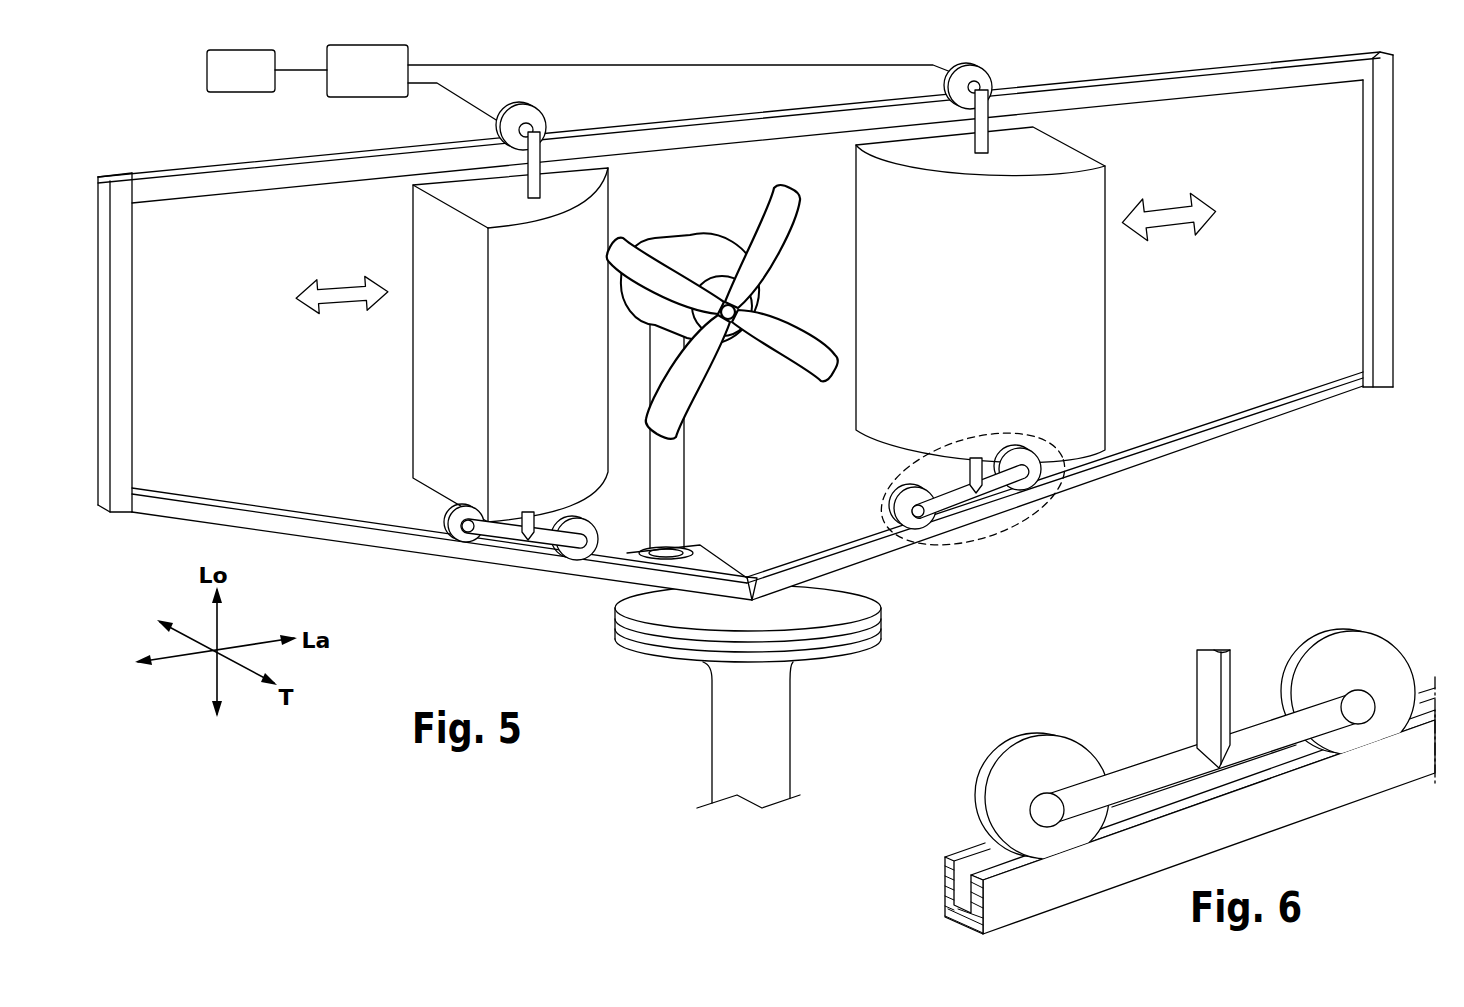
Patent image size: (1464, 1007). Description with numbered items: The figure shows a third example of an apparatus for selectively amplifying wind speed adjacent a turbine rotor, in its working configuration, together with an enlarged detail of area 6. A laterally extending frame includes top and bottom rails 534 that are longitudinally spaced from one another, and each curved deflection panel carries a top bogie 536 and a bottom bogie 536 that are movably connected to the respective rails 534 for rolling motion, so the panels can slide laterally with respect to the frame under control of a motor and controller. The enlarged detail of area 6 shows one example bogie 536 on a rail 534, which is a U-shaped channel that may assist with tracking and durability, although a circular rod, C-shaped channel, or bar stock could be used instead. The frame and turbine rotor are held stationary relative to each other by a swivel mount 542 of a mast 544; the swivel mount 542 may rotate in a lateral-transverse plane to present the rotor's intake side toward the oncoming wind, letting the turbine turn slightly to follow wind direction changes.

In FIG. 5, the rail 534 is at (176, 170).
In FIG. 6, the rail 534 is at (1150, 889).
In FIG. 5, the bogie 536 is at (510, 157).
In FIG. 6, the bogie 536 is at (1204, 631).
In FIG. 5, the detail area 6 is at (1058, 512).
In FIG. 5, the swivel mount 542 is at (838, 668).
In FIG. 5, the mast 544 is at (800, 772).